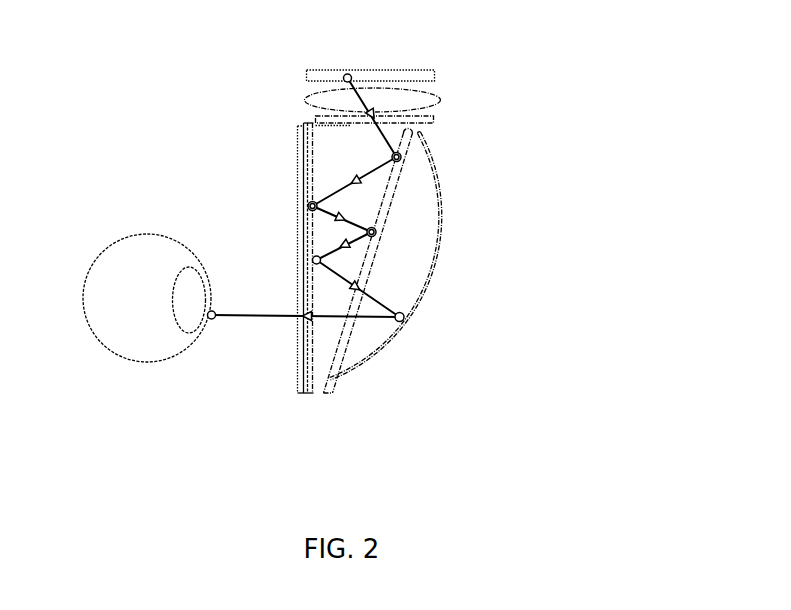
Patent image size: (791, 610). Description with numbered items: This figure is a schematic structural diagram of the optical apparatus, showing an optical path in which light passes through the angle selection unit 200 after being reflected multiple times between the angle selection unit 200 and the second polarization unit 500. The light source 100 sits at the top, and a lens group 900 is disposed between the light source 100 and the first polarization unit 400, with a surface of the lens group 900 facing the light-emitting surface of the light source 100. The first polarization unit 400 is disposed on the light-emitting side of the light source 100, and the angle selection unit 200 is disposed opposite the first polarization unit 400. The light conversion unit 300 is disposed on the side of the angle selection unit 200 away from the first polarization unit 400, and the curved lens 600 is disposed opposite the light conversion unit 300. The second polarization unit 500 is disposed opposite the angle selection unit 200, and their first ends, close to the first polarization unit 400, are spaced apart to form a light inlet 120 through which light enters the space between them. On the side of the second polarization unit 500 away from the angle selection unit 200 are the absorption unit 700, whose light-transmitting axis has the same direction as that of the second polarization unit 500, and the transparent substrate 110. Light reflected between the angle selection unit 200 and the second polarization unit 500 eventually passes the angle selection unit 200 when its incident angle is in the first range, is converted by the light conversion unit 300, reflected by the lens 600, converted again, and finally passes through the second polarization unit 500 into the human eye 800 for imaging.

The light source 100 is at (423, 75).
The lens group 900 is at (434, 101).
The first polarization unit 400 is at (434, 120).
The light inlet 120 is at (348, 126).
The transparent substrate 110 is at (298, 395).
The absorption unit 700 is at (307, 395).
The second polarization unit 500 is at (313, 395).
The angle selection unit 200 is at (368, 240).
The light conversion unit 300 is at (392, 205).
The lens 600 is at (437, 188).
The human eye 800 is at (172, 253).